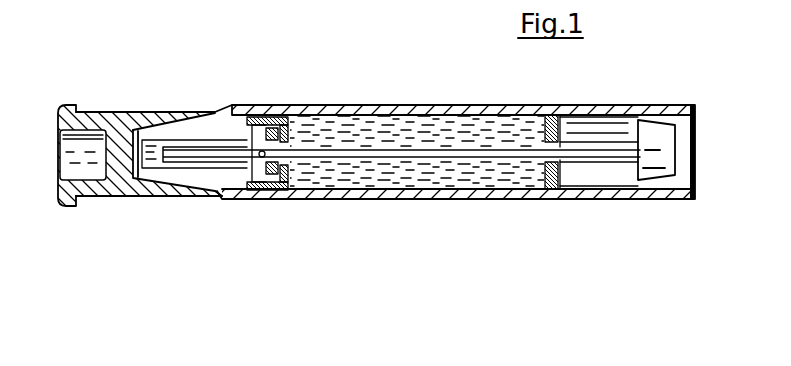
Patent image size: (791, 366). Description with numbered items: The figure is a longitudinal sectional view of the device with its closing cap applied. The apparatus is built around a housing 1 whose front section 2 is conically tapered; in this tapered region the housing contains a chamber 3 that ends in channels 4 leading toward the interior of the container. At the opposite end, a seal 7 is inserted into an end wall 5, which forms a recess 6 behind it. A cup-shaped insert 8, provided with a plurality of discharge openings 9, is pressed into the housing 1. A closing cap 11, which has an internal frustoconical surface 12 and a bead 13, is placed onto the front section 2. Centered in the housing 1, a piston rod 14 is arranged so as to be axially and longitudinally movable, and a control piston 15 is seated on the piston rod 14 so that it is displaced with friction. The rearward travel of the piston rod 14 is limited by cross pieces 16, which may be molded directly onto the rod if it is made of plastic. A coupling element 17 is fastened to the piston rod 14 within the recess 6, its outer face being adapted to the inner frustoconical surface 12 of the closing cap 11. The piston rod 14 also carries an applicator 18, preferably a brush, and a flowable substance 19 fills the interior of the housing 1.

The housing 1 is at (422, 105).
The front section 2 is at (188, 111).
The chamber 3 is at (220, 190).
The channels 4 is at (233, 190).
The end wall 5 is at (553, 104).
The recess 6 is at (652, 104).
The seal 7 is at (550, 186).
The cup-shaped insert 8 is at (282, 112).
The discharge openings 9 is at (328, 105).
The closing cap 11 is at (122, 190).
The internal frustoconical surface 12 is at (138, 196).
The bead 13 is at (72, 104).
The piston rod 14 is at (458, 183).
The control piston 15 is at (277, 190).
The cross pieces 16 is at (253, 112).
The coupling element 17 is at (663, 181).
The applicator 18 is at (188, 190).
The flowable substance 19 is at (383, 190).